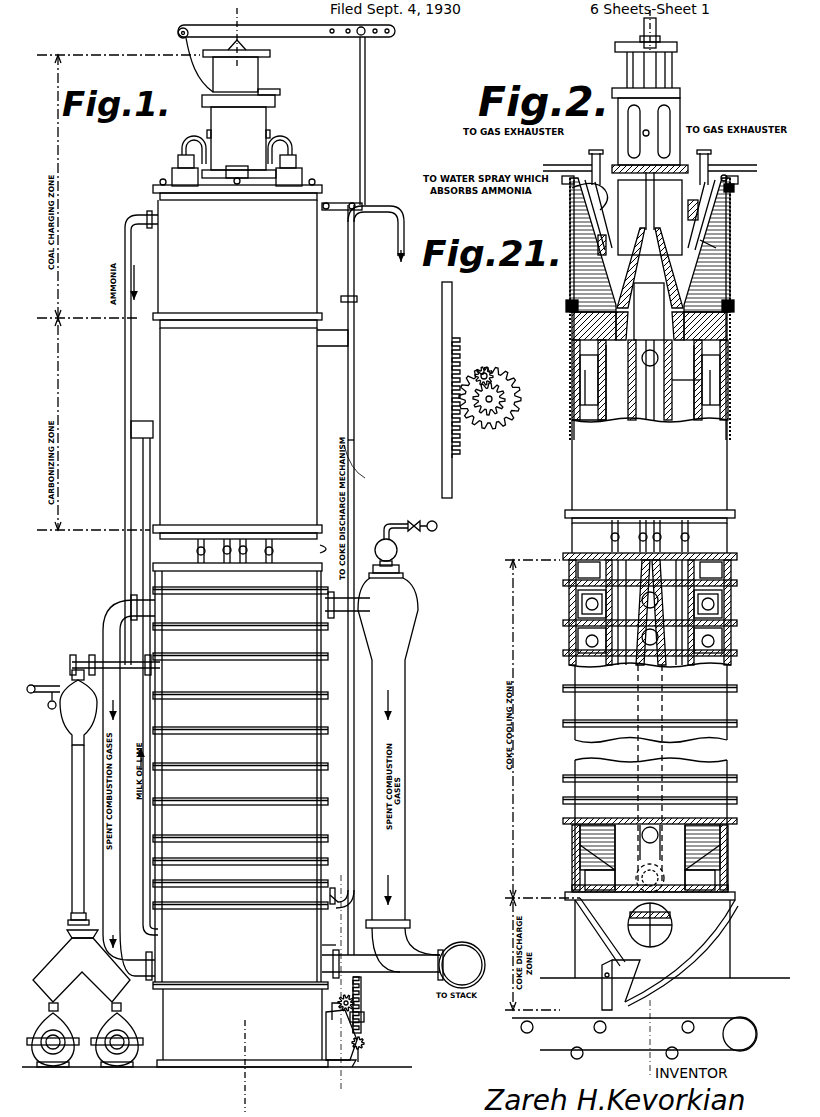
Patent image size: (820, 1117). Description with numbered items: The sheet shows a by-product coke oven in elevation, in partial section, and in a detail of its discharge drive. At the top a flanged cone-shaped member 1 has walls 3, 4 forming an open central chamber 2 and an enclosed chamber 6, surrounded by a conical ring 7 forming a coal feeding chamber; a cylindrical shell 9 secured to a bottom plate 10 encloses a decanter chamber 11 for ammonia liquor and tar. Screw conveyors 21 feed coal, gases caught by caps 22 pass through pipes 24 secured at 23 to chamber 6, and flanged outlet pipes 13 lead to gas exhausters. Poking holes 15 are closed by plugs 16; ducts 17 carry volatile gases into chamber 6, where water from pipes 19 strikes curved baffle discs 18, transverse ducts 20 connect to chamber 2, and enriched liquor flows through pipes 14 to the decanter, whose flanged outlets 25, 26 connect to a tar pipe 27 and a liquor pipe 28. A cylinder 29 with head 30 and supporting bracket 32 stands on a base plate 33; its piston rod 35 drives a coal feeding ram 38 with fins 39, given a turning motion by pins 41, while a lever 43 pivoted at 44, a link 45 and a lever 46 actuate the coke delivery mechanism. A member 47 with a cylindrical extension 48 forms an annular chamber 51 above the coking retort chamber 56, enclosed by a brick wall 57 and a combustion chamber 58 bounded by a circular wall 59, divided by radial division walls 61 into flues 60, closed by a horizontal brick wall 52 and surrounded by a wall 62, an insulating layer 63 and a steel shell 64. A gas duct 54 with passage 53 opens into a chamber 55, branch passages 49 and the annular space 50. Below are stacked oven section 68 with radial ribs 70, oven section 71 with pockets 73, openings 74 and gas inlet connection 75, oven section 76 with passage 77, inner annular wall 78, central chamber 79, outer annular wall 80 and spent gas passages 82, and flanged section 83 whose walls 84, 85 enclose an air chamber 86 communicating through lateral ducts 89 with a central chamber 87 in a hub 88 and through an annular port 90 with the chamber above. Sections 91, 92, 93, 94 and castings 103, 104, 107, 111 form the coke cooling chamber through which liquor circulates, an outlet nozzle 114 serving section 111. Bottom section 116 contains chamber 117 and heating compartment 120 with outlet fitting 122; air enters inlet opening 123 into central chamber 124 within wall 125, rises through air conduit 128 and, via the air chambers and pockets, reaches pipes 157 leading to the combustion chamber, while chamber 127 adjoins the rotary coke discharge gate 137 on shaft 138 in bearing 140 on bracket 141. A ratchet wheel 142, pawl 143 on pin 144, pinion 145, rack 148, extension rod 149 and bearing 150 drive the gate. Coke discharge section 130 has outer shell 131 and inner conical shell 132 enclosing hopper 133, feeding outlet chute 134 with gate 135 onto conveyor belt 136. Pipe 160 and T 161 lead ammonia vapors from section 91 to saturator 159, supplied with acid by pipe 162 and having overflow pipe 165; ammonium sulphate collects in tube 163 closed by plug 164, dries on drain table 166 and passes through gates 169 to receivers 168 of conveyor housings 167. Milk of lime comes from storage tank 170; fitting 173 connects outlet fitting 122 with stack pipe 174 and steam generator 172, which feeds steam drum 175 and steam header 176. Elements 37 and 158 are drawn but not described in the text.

In FIG. 2, the outer shell 1 is at (738, 182).
In FIG. 1, the section line 2 is at (210, 17).
In FIG. 2, the section line 3 is at (655, 15).
In FIG. 2, the section line 4 is at (653, 1063).
In FIG. 2, the hatched wall block 6 is at (698, 210).
In FIG. 2, the support strut 7 is at (716, 245).
In FIG. 1, the vessel wall 9 is at (317, 250).
In FIG. 2, the vessel wall 9 is at (730, 272).
In FIG. 2, the anchor block 10 is at (734, 306).
In FIG. 2, the inner shell 11 is at (730, 292).
In FIG. 1, the gas outlet pipe 13 is at (232, 176).
In FIG. 2, the gas outlet pipe 13 is at (596, 150).
In FIG. 2, the refractory lining 14 is at (750, 255).
In FIG. 2, the seal block 15 is at (734, 190).
In FIG. 1, the bolt 16 is at (160, 181).
In FIG. 2, the bolt 16 is at (727, 178).
In FIG. 2, the support rod 17 is at (588, 210).
In FIG. 2, the water spray ring 18 is at (582, 190).
In FIG. 1, the gas exhaust pipe 19 is at (238, 177).
In FIG. 2, the gas exhaust pipe 19 is at (543, 168).
In FIG. 2, the baffle block 20 is at (598, 240).
In FIG. 1, the section line 21 is at (326, 882).
In FIG. 1, the valve body 22 is at (176, 160).
In FIG. 1, the valve stem 23 is at (298, 160).
In FIG. 1, the U pipe 24 is at (192, 146).
In FIG. 1, the pipe flange 25 is at (352, 296).
In FIG. 1, the ammonia inlet elbow 26 is at (150, 228).
In FIG. 1, the branch pipe 27 is at (392, 212).
In FIG. 1, the ammonia pipe 28 is at (125, 365).
In FIG. 2, the guide columns 29 is at (672, 72).
In FIG. 2, the top plate 30 is at (677, 47).
In FIG. 1, the cylinder 32 is at (266, 122).
In FIG. 2, the cylinder 32 is at (680, 118).
In FIG. 2, the charging chamber 33 is at (635, 200).
In FIG. 2, the piston rod 35 is at (654, 215).
In FIG. 1, the hood 37 is at (268, 88).
In FIG. 2, the cone left wall 38 is at (640, 282).
In FIG. 2, the cone right wall 39 is at (668, 290).
In FIG. 1, the pivot pin 41 is at (270, 136).
In FIG. 2, the pivot pin 41 is at (650, 133).
In FIG. 1, the lever beam 43 is at (303, 37).
In FIG. 2, the lever beam 43 is at (656, 38).
In FIG. 1, the lever pivot 44 is at (178, 36).
In FIG. 1, the link rod 45 is at (366, 100).
In FIG. 1, the bracket 46 is at (355, 205).
In FIG. 2, the hatched band right 47 is at (727, 335).
In FIG. 2, the central box 48 is at (649, 311).
In FIG. 2, the inner wall 49 is at (572, 350).
In FIG. 2, the partition wall 50 is at (580, 362).
In FIG. 2, the wedge block 51 is at (651, 326).
In FIG. 2, the hatched band left 52 is at (572, 325).
In FIG. 2, the center wall left 53 is at (648, 425).
In FIG. 2, the center wall right 54 is at (662, 420).
In FIG. 2, the center rod 55 is at (652, 380).
In FIG. 2, the inner partition 56 is at (623, 415).
In FIG. 2, the window 57 is at (598, 397).
In FIG. 2, the rod 58 is at (582, 410).
In FIG. 2, the window right 59 is at (720, 358).
In FIG. 2, the bottom plate 60 is at (578, 422).
In FIG. 2, the cross rod 61 is at (684, 390).
In FIG. 2, the rod right 62 is at (723, 368).
In FIG. 2, the wall 63 is at (726, 396).
In FIG. 1, the bracket 64 is at (318, 397).
In FIG. 2, the bracket 64 is at (728, 410).
In FIG. 1, the flange 68 is at (298, 545).
In FIG. 2, the flange 68 is at (735, 515).
In FIG. 2, the spacer ring 70 is at (727, 540).
In FIG. 1, the flange 71 is at (237, 573).
In FIG. 2, the flange 71 is at (737, 557).
In FIG. 2, the cooling wall 73 is at (572, 566).
In FIG. 2, the box 74 is at (590, 572).
In FIG. 1, the fitting 75 is at (318, 572).
In FIG. 1, the cooling tube 76 is at (240, 602).
In FIG. 2, the cooling tube 76 is at (737, 583).
In FIG. 2, the roller 77 is at (658, 600).
In FIG. 2, the box right 78 is at (706, 598).
In FIG. 2, the box left 79 is at (600, 595).
In FIG. 2, the cooling tube 80 is at (724, 616).
In FIG. 2, the center shaft 82 is at (643, 622).
In FIG. 1, the cooling tube 83 is at (325, 625).
In FIG. 2, the cooling tube 83 is at (731, 632).
In FIG. 2, the cooling tube 84 is at (731, 652).
In FIG. 2, the roller 85 is at (658, 640).
In FIG. 2, the box 86 is at (580, 636).
In FIG. 2, the wall 87 is at (656, 652).
In FIG. 2, the wall 88 is at (640, 665).
In FIG. 2, the wall 89 is at (620, 662).
In FIG. 2, the roller 90 is at (586, 615).
In FIG. 1, the cooling tube 91 is at (325, 657).
In FIG. 2, the cooling tube 91 is at (731, 667).
In FIG. 1, the cooling tube 92 is at (300, 717).
In FIG. 2, the cooling tube 92 is at (737, 689).
In FIG. 1, the cooling tube 93 is at (300, 752).
In FIG. 2, the cooling tube 93 is at (737, 724).
In FIG. 1, the cooling tube 94 is at (300, 788).
In FIG. 1, the cooling tube 103 is at (300, 822).
In FIG. 1, the cooling tube 104 is at (318, 840).
In FIG. 1, the cooling tube 107 is at (318, 862).
In FIG. 2, the cooling tube 107 is at (737, 778).
In FIG. 1, the cooling tube 111 is at (318, 884).
In FIG. 2, the cooling tube 111 is at (737, 800).
In FIG. 1, the pipe elbow 114 is at (335, 895).
In FIG. 1, the cooling tube 116 is at (255, 905).
In FIG. 2, the cooling tube 116 is at (737, 821).
In FIG. 2, the refractory 117 is at (582, 840).
In FIG. 2, the box 120 is at (585, 876).
In FIG. 1, the outlet pipe 122 is at (330, 963).
In FIG. 2, the outlet pipe 122 is at (580, 886).
In FIG. 1, the roller 123 is at (322, 950).
In FIG. 2, the roller 123 is at (646, 845).
In FIG. 2, the roller 124 is at (652, 828).
In FIG. 2, the diagonal plate 125 is at (590, 856).
In FIG. 2, the drum 127 is at (660, 870).
In FIG. 2, the shaft 128 is at (665, 705).
In FIG. 1, the base section 130 is at (240, 1024).
In FIG. 2, the base section 130 is at (735, 896).
In FIG. 2, the discharge wall 131 is at (732, 936).
In FIG. 2, the chute 132 is at (695, 945).
In FIG. 2, the chute plate 133 is at (650, 978).
In FIG. 2, the chute bottom 134 is at (634, 992).
In FIG. 2, the bracket 135 is at (602, 1000).
In FIG. 2, the conveyor 136 is at (700, 1018).
In FIG. 2, the wheel 137 is at (645, 935).
In FIG. 2, the bearing 138 is at (672, 918).
In FIG. 1, the gear housing 140 is at (364, 1018).
In FIG. 1, the bracket 141 is at (332, 1055).
In FIG. 1, the gear 142 is at (338, 1022).
In FIG. 21, the gear 142 is at (485, 412).
In FIG. 1, the pinion 143 is at (340, 1000).
In FIG. 21, the pinion 143 is at (486, 370).
In FIG. 21, the pinion shaft 144 is at (481, 378).
In FIG. 1, the gear 145 is at (362, 1003).
In FIG. 21, the gear 145 is at (505, 425).
In FIG. 1, the rack 148 is at (362, 985).
In FIG. 21, the rack 148 is at (458, 345).
In FIG. 1, the rack bar 149 is at (367, 462).
In FIG. 21, the rack bar 149 is at (452, 295).
In FIG. 1, the pinion 150 is at (364, 1043).
In FIG. 1, the valve 157 is at (244, 548).
In FIG. 2, the valve 157 is at (650, 535).
In FIG. 1, the valve 158 is at (222, 548).
In FIG. 2, the valve 158 is at (622, 535).
In FIG. 1, the tank 159 is at (70, 695).
In FIG. 1, the pipe 160 is at (98, 660).
In FIG. 1, the flange 161 is at (72, 658).
In FIG. 1, the valve 162 is at (30, 695).
In FIG. 1, the pipe 163 is at (82, 850).
In FIG. 1, the flange 164 is at (68, 918).
In FIG. 1, the valve 165 is at (52, 710).
In FIG. 1, the hopper 166 is at (75, 950).
In FIG. 1, the pump 167 is at (62, 1052).
In FIG. 1, the pump housing 168 is at (40, 1030).
In FIG. 1, the connector 169 is at (108, 1005).
In FIG. 1, the lime box 170 is at (131, 432).
In FIG. 1, the tank 172 is at (405, 612).
In FIG. 1, the stack pipe 173 is at (440, 955).
In FIG. 1, the stack 174 is at (465, 950).
In FIG. 1, the ball valve 175 is at (397, 553).
In FIG. 1, the gauge 176 is at (437, 524).